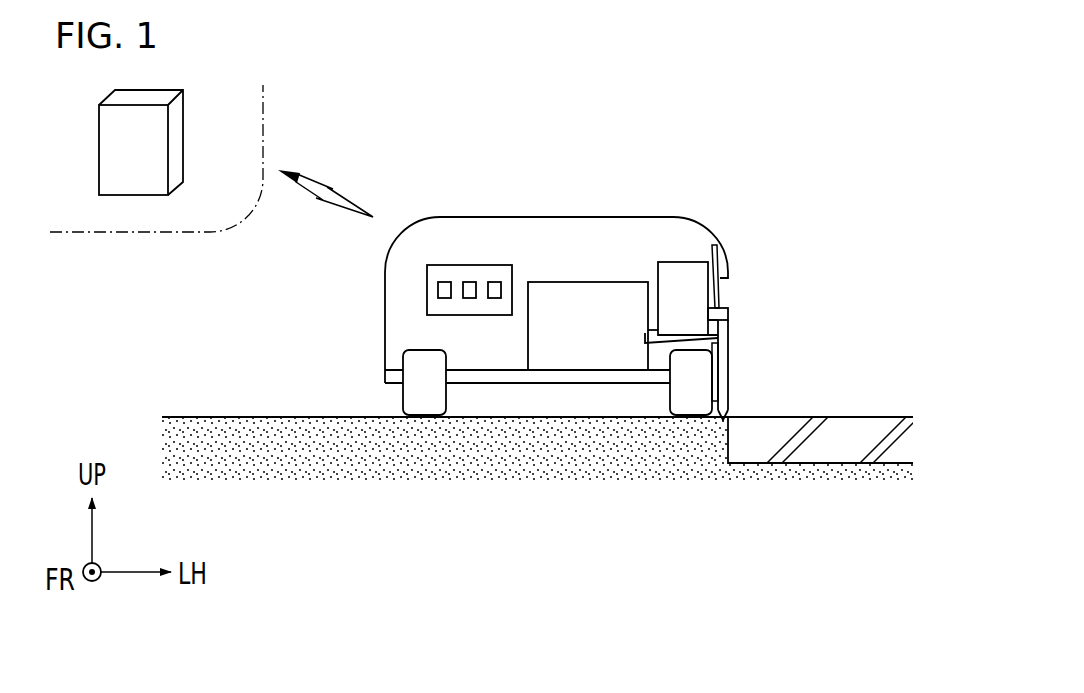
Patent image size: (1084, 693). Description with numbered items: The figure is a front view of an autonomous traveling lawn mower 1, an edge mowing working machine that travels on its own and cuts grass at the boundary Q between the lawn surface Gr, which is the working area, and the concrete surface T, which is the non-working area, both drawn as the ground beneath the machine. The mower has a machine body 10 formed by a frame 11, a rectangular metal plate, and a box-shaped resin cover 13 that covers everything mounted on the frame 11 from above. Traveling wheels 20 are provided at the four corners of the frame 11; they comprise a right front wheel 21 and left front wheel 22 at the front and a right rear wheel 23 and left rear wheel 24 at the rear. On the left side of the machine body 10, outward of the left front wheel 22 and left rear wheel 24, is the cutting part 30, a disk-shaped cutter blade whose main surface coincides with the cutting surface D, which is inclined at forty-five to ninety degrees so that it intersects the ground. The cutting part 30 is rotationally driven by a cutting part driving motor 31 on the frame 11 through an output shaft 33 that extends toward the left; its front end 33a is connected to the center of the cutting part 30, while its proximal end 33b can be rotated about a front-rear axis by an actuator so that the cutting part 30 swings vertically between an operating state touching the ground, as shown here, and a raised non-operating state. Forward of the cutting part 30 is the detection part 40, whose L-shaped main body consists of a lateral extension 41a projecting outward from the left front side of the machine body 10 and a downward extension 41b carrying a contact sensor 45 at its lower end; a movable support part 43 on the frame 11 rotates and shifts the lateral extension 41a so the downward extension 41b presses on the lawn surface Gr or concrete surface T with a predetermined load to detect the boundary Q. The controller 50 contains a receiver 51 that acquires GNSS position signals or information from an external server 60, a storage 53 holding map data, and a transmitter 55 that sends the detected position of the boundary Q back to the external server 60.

The autonomous traveling lawn mower 1 is at (343, 273).
The machine body 10 is at (571, 269).
The frame 11 is at (604, 376).
The cover 13 is at (552, 216).
The traveling wheels 20 is at (614, 438).
The right front wheel 21 is at (424, 382).
The left front wheel 22 is at (691, 382).
The right rear wheel 23 is at (424, 382).
The left rear wheel 24 is at (691, 382).
The cutting part 30 is at (723, 262).
The cutting part driving motor 31 is at (585, 281).
The output shaft 33 is at (753, 386).
The front end 33a is at (730, 328).
The proximal end 33b is at (644, 345).
The detection part 40 is at (731, 352).
The lateral extension 41a is at (716, 312).
The downward extension 41b is at (719, 380).
The movable support part 43 is at (682, 268).
The contact sensor 45 is at (729, 413).
The controller 50 is at (427, 259).
The receiver 51 is at (441, 279).
The storage 53 is at (468, 280).
The transmitter 55 is at (495, 280).
The external server 60 is at (178, 137).
The cutting surface D is at (722, 284).
The boundary Q is at (731, 440).
The concrete surface T is at (885, 420).
The lawn surface Gr is at (222, 430).